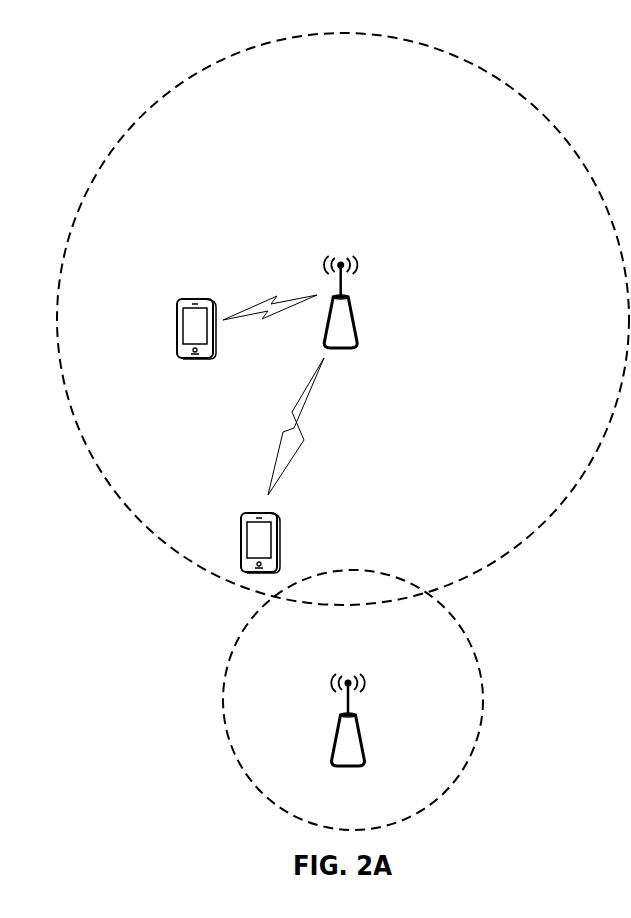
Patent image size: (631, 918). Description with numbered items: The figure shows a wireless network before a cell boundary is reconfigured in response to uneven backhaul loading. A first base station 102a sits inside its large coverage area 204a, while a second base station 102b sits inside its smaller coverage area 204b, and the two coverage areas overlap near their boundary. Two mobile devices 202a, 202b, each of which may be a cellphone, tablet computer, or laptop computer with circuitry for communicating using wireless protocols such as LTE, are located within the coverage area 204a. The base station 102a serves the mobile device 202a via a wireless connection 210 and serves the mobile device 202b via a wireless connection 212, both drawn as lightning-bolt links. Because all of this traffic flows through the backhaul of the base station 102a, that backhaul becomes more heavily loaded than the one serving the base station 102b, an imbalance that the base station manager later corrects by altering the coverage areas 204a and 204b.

The base station 102a is at (353, 322).
The base station 102b is at (361, 742).
The mobile device 202a is at (222, 371).
The mobile device 202b is at (280, 531).
The coverage area 204a is at (567, 139).
The coverage area 204b is at (482, 720).
The wireless connection 210 is at (265, 299).
The wireless connection 212 is at (284, 432).